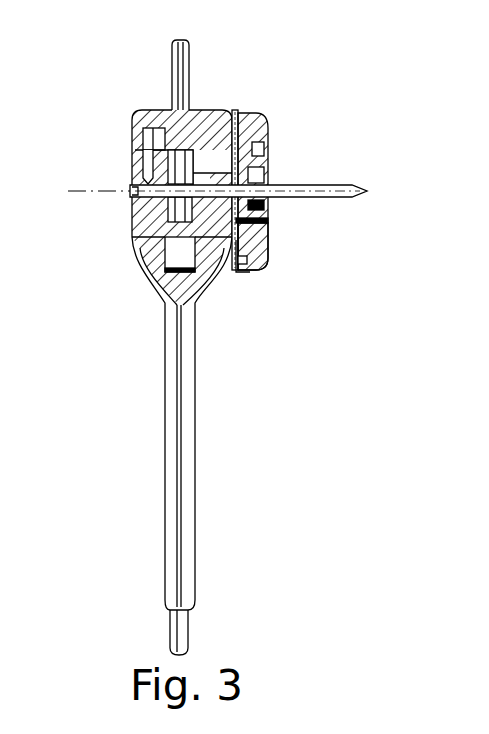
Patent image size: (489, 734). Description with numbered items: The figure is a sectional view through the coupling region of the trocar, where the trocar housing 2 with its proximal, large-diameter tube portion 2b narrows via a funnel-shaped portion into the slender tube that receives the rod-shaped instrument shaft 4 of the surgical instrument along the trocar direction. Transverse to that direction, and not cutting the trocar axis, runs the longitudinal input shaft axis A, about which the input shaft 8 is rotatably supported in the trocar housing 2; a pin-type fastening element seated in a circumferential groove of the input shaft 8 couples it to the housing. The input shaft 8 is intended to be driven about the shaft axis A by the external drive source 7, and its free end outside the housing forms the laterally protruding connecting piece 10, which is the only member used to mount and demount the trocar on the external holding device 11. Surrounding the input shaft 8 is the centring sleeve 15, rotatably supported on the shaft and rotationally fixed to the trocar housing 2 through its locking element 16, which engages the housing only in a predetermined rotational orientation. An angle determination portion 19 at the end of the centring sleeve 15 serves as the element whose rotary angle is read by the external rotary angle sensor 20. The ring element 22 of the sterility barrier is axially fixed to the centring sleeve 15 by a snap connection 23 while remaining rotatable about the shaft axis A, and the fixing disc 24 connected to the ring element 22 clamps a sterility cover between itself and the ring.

The longitudinal input shaft axis A is at (82, 191).
The trocar housing 2 is at (193, 340).
The proximal tube portion 2b is at (203, 152).
The instrument shaft 4 is at (176, 75).
The locking element 16 is at (265, 132).
The centring sleeve 15 is at (268, 158).
The input shaft 8 is at (262, 159).
The connecting piece 10 is at (288, 188).
The external drive source 7 is at (294, 164).
The external holding device 11 is at (294, 164).
The external rotary angle sensor 20 is at (294, 164).
The angle determination portion 19 is at (268, 207).
The snap connection 23 is at (268, 223).
The ring element 22 is at (257, 270).
The fixing disc 24 is at (243, 273).